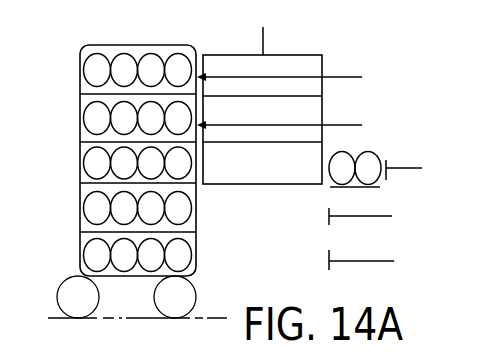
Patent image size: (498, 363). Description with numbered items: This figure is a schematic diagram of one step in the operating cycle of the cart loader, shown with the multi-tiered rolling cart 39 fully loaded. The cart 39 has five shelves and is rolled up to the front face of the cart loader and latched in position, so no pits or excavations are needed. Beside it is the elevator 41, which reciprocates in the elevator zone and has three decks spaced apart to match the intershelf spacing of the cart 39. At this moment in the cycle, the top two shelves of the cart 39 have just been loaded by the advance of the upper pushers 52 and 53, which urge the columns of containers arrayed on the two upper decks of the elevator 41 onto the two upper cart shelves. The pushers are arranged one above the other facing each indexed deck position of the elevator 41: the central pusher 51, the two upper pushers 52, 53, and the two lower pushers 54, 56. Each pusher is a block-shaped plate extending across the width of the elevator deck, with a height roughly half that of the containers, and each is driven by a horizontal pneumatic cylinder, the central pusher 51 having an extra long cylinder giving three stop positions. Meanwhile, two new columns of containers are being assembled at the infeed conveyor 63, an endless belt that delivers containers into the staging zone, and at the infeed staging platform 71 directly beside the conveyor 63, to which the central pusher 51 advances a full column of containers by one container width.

The rolling cart 39 is at (138, 145).
The elevator 41 is at (262, 124).
The central pusher 51 is at (414, 160).
The upper pusher 52 is at (288, 62).
The upper pusher 53 is at (288, 112).
The lower pusher 54 is at (364, 228).
The lower pusher 56 is at (364, 272).
The infeed conveyor line 63 is at (371, 200).
The infeed staging platform 71 is at (341, 182).